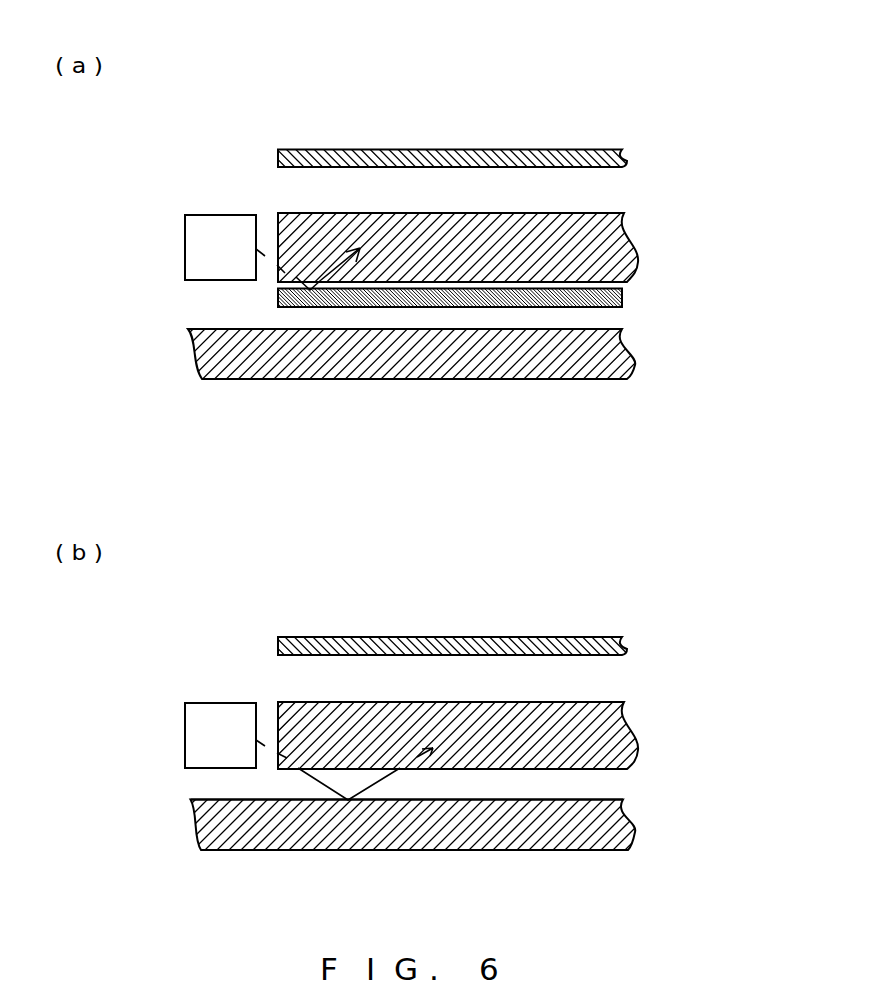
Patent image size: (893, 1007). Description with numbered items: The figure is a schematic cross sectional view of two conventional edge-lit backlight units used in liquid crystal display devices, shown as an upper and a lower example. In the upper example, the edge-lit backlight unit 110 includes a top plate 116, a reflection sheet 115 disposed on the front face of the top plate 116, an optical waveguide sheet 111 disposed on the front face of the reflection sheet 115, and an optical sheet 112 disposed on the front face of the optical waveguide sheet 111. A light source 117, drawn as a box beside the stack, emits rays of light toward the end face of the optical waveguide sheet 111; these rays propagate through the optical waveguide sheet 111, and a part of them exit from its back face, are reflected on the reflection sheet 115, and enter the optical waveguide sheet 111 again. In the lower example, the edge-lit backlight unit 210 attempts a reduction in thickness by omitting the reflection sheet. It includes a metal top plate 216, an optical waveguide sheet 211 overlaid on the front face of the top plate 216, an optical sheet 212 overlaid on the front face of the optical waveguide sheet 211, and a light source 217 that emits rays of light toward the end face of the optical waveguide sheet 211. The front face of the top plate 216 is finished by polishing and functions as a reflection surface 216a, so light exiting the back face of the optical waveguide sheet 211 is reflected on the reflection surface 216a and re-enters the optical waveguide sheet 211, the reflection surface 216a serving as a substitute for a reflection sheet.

The edge-lit backlight unit 110 is at (663, 123).
The optical waveguide sheet 111 is at (577, 238).
The optical sheet 112 is at (393, 157).
The reflection sheet 115 is at (480, 305).
The top plate 116 is at (197, 362).
The light source 117 is at (195, 252).
The edge-lit backlight unit 210 is at (673, 622).
The optical waveguide sheet 211 is at (577, 725).
The optical sheet 212 is at (393, 645).
The top plate 216 is at (197, 833).
The reflection surface 216a is at (597, 800).
The light source 217 is at (195, 741).